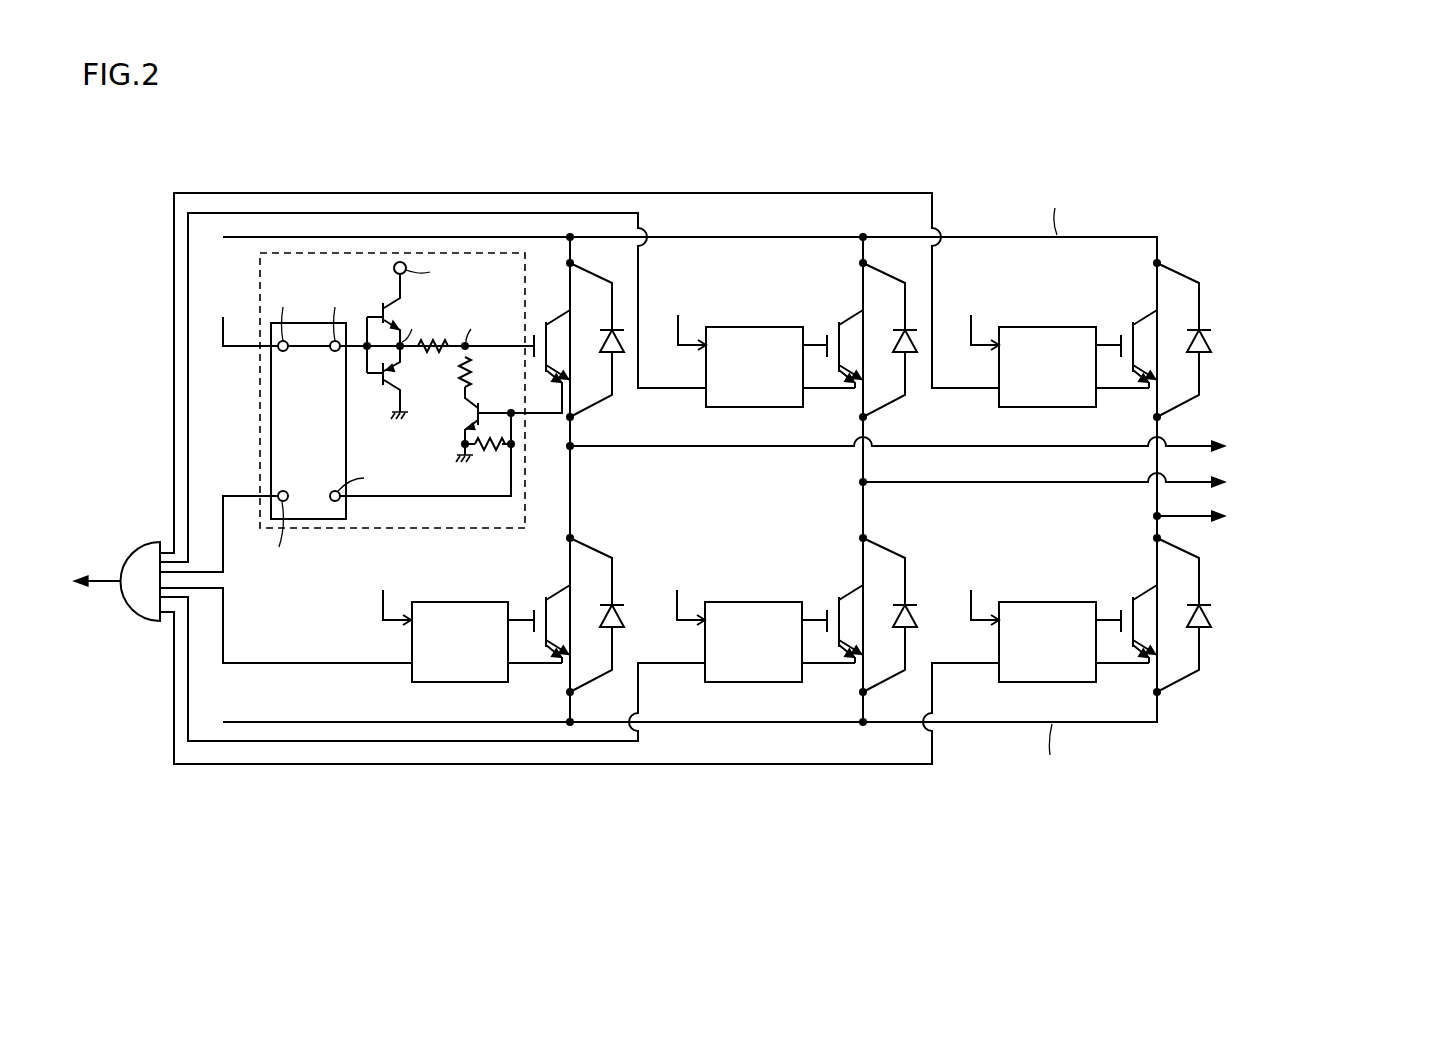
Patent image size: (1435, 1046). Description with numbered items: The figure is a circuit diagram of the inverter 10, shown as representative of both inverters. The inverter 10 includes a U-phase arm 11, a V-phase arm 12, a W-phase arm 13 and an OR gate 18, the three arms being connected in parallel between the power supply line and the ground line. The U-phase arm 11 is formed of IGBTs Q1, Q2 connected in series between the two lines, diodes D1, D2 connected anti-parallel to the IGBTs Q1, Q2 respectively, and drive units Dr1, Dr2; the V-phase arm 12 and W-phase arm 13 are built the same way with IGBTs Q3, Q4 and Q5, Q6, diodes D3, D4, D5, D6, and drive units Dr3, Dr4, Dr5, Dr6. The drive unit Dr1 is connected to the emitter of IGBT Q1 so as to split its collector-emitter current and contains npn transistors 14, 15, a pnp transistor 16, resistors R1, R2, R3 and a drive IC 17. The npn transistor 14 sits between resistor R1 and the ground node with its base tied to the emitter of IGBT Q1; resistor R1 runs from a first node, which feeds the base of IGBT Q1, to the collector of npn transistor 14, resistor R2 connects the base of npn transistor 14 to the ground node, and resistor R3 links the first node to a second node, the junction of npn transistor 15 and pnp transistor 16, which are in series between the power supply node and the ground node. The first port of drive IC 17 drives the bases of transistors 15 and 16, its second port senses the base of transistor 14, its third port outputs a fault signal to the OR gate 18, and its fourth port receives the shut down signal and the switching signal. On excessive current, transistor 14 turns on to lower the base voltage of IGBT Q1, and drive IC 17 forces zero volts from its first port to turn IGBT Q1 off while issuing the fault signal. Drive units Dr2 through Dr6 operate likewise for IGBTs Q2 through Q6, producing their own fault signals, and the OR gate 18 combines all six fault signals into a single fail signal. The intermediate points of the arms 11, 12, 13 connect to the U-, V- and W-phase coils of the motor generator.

The inverter 10 is at (201, 128).
The U-phase arm 11 is at (599, 479).
The V-phase arm 12 is at (892, 520).
The W-phase arm 13 is at (1147, 528).
The npn transistor 14 is at (470, 413).
The npn transistor 15 is at (383, 305).
The pnp transistor 16 is at (384, 380).
The drive IC 17 is at (307, 322).
The OR gate 18 is at (133, 555).
The drive unit Dr1 is at (500, 252).
The drive unit Dr2 is at (462, 601).
The drive unit Dr3 is at (756, 326).
The drive unit Dr4 is at (756, 601).
The drive unit Dr5 is at (1050, 326).
The drive unit Dr6 is at (1050, 601).
The IGBT Q1 is at (533, 338).
The IGBT Q2 is at (532, 608).
The IGBT Q3 is at (827, 334).
The IGBT Q4 is at (826, 608).
The IGBT Q5 is at (1121, 334).
The IGBT Q6 is at (1120, 608).
The diode D1 is at (610, 329).
The diode D2 is at (610, 604).
The diode D3 is at (903, 329).
The diode D4 is at (903, 604).
The diode D5 is at (1197, 329).
The diode D6 is at (1197, 604).
The resistor R1 is at (471, 372).
The resistor R2 is at (500, 452).
The resistor R3 is at (432, 352).